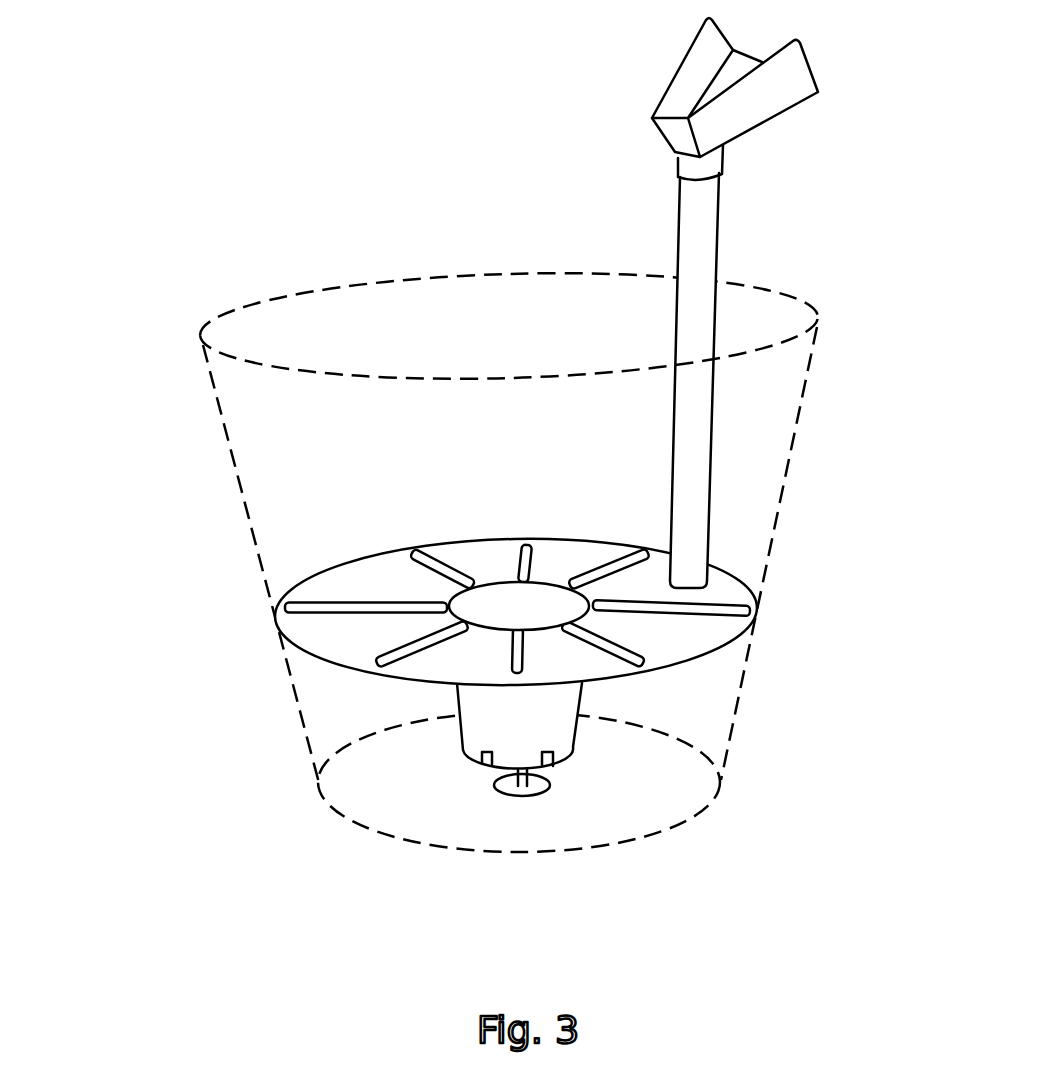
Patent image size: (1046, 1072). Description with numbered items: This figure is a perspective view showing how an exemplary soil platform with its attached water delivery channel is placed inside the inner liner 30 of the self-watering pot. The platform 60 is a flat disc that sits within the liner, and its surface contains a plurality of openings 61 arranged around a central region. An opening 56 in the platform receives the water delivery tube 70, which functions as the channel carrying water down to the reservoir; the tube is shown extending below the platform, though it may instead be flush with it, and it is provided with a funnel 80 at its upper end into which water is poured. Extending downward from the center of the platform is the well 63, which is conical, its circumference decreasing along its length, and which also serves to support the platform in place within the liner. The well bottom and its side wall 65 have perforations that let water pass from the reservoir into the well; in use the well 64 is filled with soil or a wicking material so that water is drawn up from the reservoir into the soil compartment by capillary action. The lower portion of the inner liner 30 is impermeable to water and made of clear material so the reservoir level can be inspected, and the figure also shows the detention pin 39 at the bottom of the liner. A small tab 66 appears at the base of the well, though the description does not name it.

The inner liner 30 is at (213, 425).
The detention pin 39 is at (507, 787).
The opening in the platform 56 is at (755, 603).
The platform 60 is at (327, 583).
The openings 61 is at (753, 622).
The well 63 is at (577, 745).
The well 64 is at (478, 606).
The side wall of the well 65 is at (477, 700).
The mounting tab 66 is at (550, 765).
The water delivery tube 70 is at (693, 427).
The funnel 80 is at (765, 105).